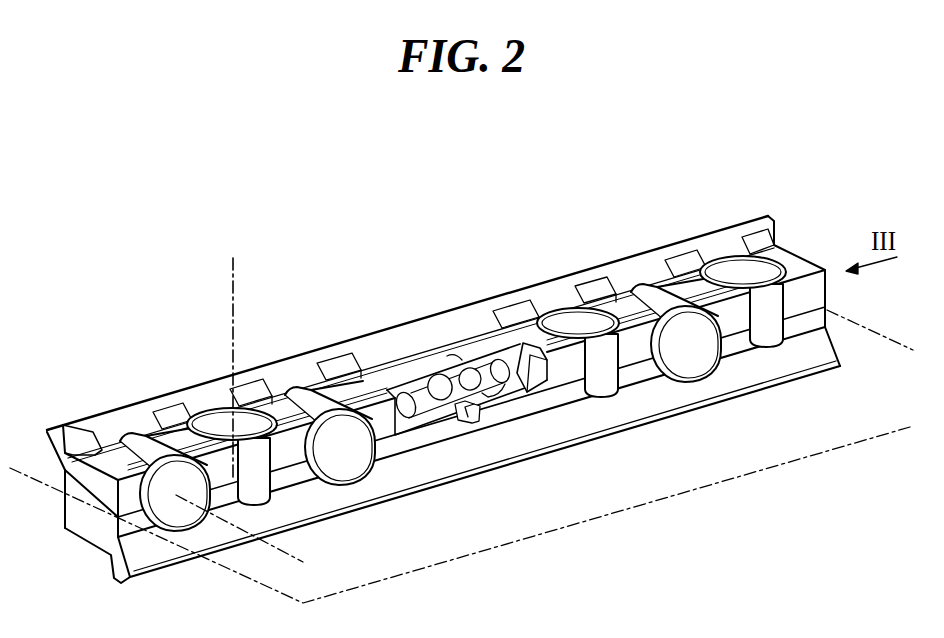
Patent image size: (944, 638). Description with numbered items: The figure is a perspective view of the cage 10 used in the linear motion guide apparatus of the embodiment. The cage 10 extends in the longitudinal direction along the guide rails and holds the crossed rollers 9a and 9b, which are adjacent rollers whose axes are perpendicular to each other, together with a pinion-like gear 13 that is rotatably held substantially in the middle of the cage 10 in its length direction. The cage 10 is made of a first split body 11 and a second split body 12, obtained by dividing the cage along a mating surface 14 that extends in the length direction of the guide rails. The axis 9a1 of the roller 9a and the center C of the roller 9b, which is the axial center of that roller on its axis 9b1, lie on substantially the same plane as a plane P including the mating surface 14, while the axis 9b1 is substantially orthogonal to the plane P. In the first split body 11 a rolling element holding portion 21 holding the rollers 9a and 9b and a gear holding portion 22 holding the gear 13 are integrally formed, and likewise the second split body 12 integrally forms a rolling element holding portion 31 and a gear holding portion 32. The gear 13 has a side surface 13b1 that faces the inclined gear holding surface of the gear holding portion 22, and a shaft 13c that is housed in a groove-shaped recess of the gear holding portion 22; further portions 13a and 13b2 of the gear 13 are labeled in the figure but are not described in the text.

The cage 10 is at (434, 314).
The first split body 11 is at (80, 508).
The second split body 12 is at (86, 478).
The mating surface 14 is at (97, 514).
The rolling element holding portion 21 is at (226, 495).
The gear holding portion 22 is at (423, 436).
The rolling element holding portion 31 is at (178, 430).
The gear holding portion 32 is at (412, 372).
The roller 9a is at (136, 447).
The axis of the roller 9a1 is at (303, 561).
The roller 9b is at (252, 418).
The axis of the roller 9b1 is at (235, 264).
The gear 13 is at (468, 358).
The spring anchor 13a is at (506, 344).
The side surface 13b1 is at (484, 397).
The spring coil portion 13b2 is at (452, 356).
The shaft 13c is at (485, 425).
The center of the roller C is at (237, 478).
The plane P is at (461, 456).